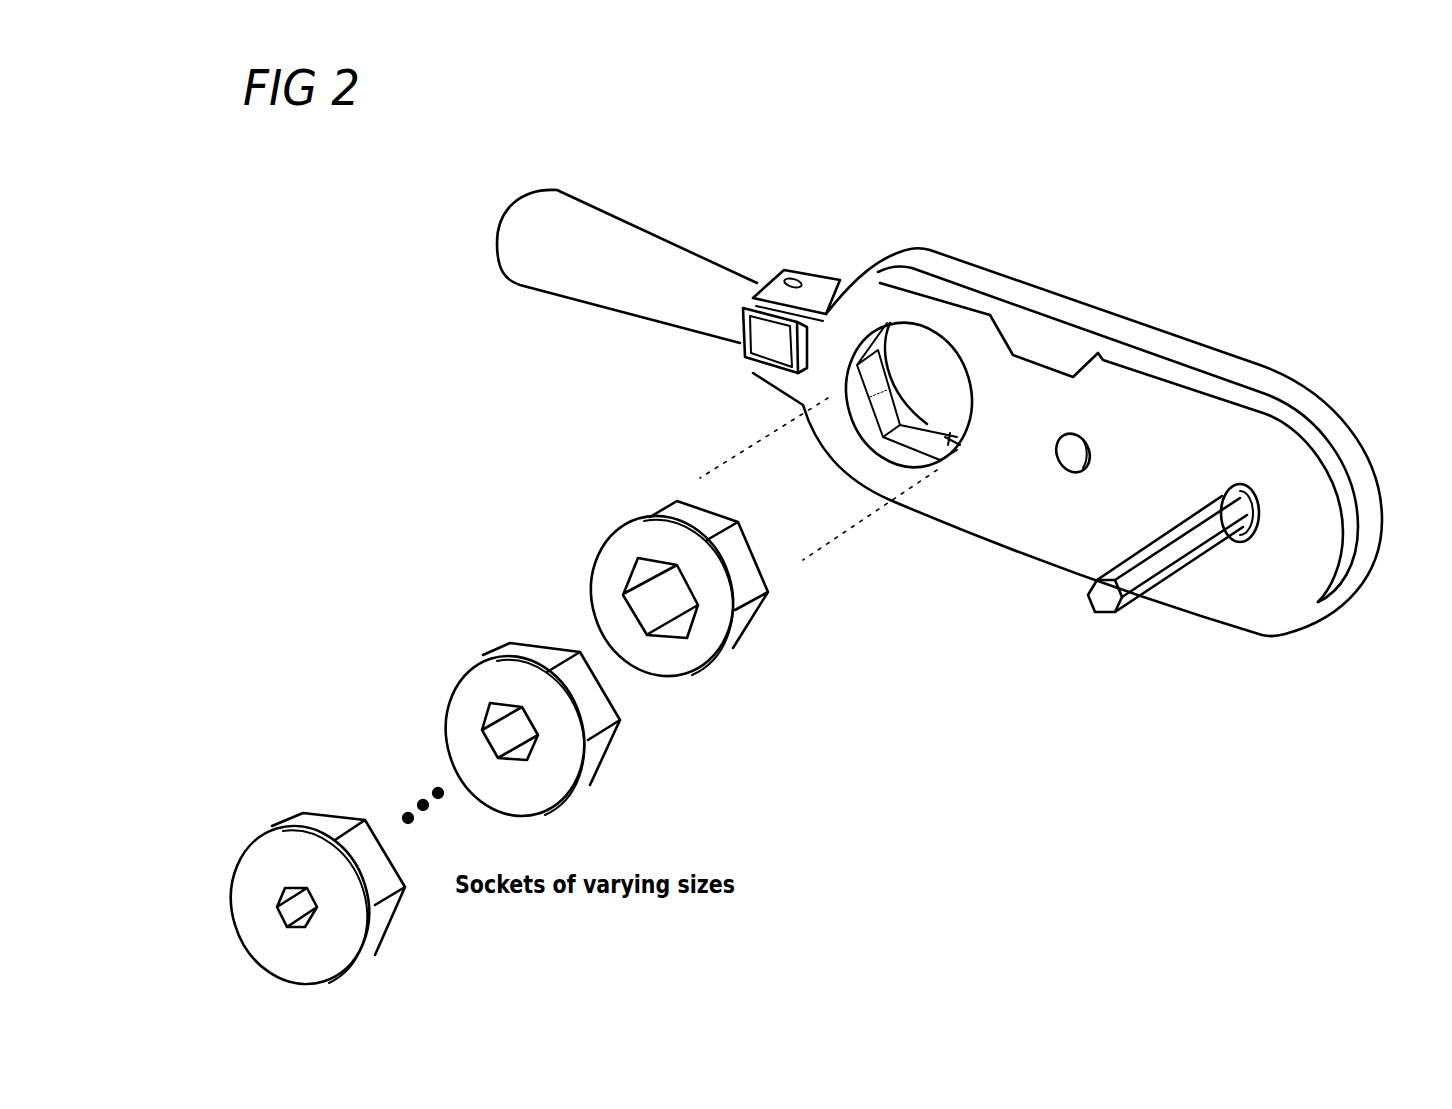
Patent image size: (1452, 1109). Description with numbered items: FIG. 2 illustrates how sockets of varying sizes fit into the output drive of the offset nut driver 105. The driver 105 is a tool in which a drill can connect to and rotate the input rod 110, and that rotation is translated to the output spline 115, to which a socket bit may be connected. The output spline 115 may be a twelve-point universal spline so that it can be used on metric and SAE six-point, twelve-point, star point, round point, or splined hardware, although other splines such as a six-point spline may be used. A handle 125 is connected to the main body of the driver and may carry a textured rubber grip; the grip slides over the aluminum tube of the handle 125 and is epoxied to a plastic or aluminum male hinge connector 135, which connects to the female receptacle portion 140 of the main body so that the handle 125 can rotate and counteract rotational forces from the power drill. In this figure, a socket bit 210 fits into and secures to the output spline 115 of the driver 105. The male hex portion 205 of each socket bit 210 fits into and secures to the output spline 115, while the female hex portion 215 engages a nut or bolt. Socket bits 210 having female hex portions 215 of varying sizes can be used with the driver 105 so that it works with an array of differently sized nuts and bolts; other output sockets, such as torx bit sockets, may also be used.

The offset nut driver 105 is at (1299, 297).
The input rod 110 is at (1105, 614).
The output spline 115 is at (876, 334).
The handle 125 is at (645, 229).
The male hinge connector 135 is at (746, 362).
The female receptacle portion 140 is at (812, 250).
The male hex portion 205 is at (673, 504).
The socket bit 210 is at (210, 855).
The female hex portion 215 is at (692, 623).